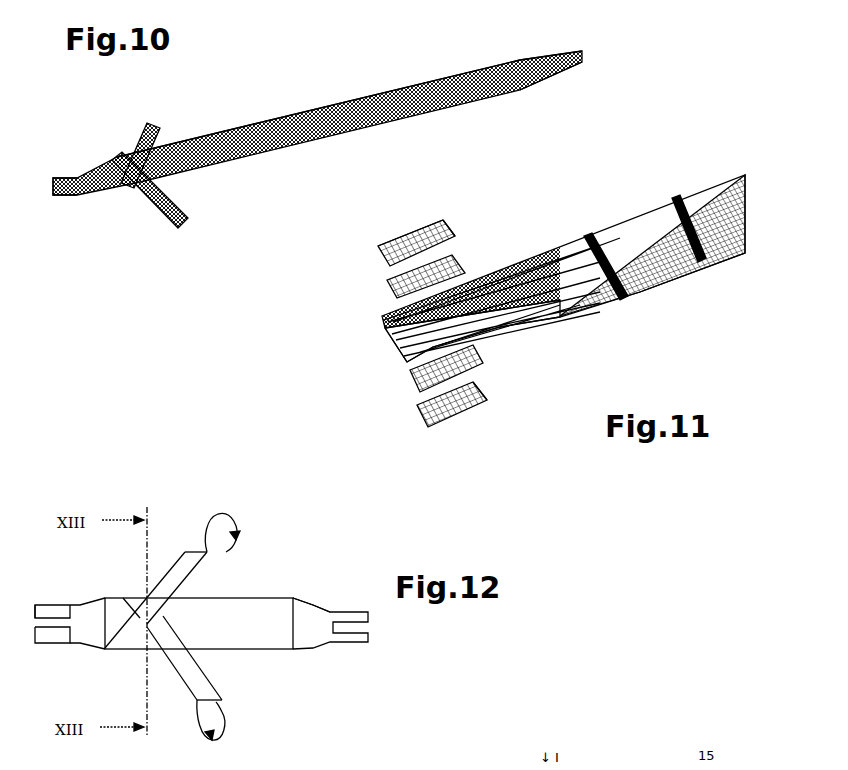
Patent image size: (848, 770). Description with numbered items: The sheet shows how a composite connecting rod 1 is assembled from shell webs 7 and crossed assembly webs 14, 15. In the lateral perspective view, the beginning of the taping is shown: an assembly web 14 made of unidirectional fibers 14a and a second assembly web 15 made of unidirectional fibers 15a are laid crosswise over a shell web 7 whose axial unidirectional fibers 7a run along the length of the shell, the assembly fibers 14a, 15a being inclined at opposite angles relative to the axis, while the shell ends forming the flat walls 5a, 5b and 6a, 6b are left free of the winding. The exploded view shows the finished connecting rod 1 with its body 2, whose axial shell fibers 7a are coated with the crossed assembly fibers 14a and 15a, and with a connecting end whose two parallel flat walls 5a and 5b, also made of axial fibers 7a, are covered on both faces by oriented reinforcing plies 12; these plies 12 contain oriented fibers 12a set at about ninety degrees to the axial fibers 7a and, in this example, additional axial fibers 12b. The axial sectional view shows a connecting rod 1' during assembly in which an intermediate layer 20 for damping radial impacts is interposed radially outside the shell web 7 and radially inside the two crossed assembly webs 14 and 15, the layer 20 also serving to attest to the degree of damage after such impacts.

In FIG. 10, the connecting rod 1 is at (317, 118).
In FIG. 11, the connecting rod 1 is at (563, 277).
In FIG. 12, the connecting rod 1' is at (334, 662).
In FIG. 11, the convex body 2 is at (714, 265).
In FIG. 10, the flat wall 5a is at (70, 173).
In FIG. 11, the flat wall 5a is at (380, 322).
In FIG. 10, the flat wall 5b is at (71, 197).
In FIG. 11, the flat wall 5b is at (395, 342).
In FIG. 10, the flat wall 6a is at (580, 52).
In FIG. 10, the flat wall 6b is at (583, 63).
In FIG. 12, the shell web 7 is at (85, 618).
In FIG. 10, the axial unidirectional fibers 7a is at (296, 112).
In FIG. 11, the axial unidirectional fibers 7a is at (470, 286).
In FIG. 11, the reinforcing plies 12 is at (383, 258).
In FIG. 11, the oriented fibers 12a is at (457, 230).
In FIG. 11, the axial fibers 12b is at (438, 220).
In FIG. 12, the assembly web 14 is at (185, 550).
In FIG. 10, the unidirectional fibers 14a is at (137, 143).
In FIG. 11, the unidirectional fibers 14a is at (678, 197).
In FIG. 12, the assembly web 15 is at (204, 682).
In FIG. 10, the unidirectional fibers 15a is at (174, 203).
In FIG. 11, the unidirectional fibers 15a is at (598, 227).
In FIG. 12, the intermediate layer 20 is at (252, 610).